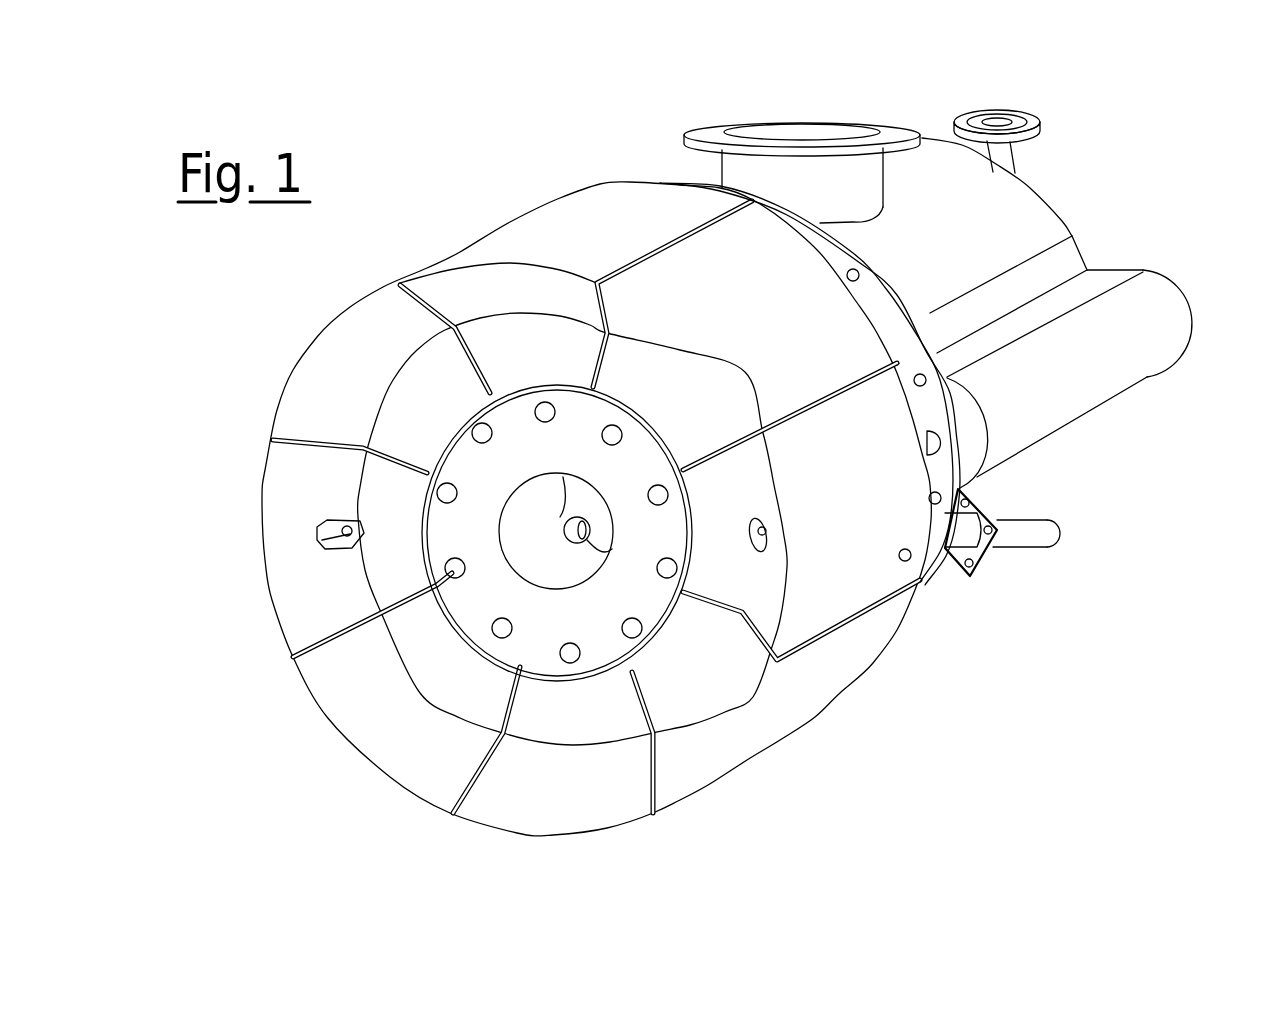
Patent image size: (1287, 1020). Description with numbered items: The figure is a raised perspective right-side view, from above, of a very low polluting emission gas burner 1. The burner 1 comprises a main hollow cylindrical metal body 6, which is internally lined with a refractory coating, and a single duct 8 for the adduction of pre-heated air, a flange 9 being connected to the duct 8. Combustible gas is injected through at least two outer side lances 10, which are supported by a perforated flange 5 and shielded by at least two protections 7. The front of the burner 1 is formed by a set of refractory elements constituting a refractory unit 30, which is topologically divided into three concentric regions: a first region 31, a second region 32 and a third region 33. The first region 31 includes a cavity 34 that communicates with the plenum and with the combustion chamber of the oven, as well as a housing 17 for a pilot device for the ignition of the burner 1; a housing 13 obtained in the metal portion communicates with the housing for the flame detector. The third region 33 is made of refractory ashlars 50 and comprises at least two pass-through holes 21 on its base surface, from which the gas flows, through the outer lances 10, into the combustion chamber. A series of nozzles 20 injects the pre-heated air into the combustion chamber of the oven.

The gas burner 1 is at (1113, 722).
The perforated flange 5 is at (937, 533).
The main hollow cylindrical metal body 6 is at (1023, 222).
The protections 7 is at (1153, 350).
The duct 8 is at (863, 187).
The flange 9 is at (717, 123).
The outer side lances 10 is at (318, 527).
The housing 13 is at (1020, 537).
The housing for a pilot device 17 is at (566, 529).
The nozzles 20 is at (476, 438).
The pass-through holes 21 is at (336, 551).
The refractory unit 30 is at (293, 791).
The first region 31 is at (573, 577).
The second region 32 is at (523, 638).
The third region 33 is at (484, 813).
The cavity 34 is at (547, 574).
The refractory ashlars 50 is at (740, 293).